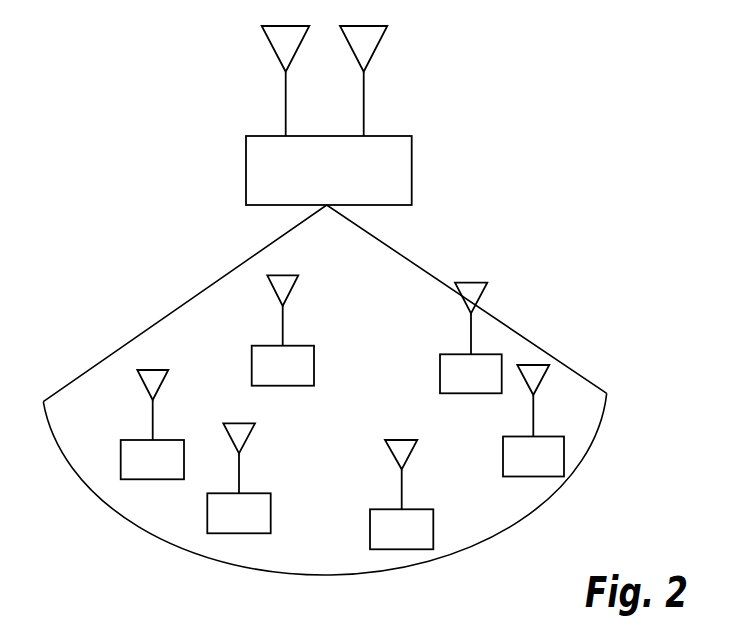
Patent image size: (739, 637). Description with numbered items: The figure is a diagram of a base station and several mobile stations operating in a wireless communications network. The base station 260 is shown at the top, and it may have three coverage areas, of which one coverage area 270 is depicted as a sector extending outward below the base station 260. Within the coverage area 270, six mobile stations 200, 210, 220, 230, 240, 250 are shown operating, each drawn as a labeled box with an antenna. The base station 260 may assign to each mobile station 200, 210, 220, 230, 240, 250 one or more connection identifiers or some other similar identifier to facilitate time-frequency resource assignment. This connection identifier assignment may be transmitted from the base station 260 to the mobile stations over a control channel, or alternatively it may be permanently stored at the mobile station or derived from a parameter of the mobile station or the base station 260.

The mobile station 200 is at (370, 530).
The mobile station 210 is at (121, 460).
The mobile station 220 is at (440, 375).
The mobile station 230 is at (207, 515).
The mobile station 240 is at (503, 457).
The mobile station 250 is at (252, 365).
The base station 260 is at (412, 171).
The coverage area 270 is at (152, 322).